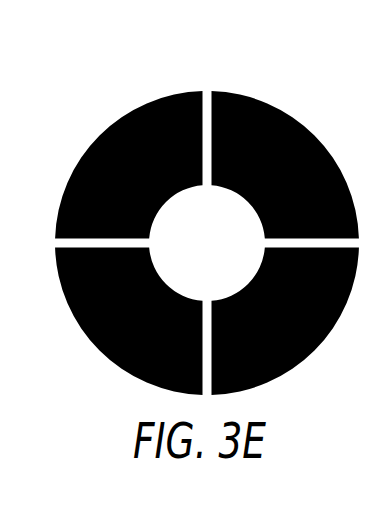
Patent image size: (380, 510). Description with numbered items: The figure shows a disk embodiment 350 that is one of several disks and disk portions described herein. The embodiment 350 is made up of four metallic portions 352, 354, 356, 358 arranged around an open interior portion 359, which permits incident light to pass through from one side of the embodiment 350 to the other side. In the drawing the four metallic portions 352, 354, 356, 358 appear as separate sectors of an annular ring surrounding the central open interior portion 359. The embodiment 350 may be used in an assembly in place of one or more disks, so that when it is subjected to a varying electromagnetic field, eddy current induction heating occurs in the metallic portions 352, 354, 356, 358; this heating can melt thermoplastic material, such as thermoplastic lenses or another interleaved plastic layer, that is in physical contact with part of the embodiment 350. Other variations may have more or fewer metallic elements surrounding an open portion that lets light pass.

The embodiment 350 is at (228, 59).
The metallic portion 352 is at (105, 114).
The metallic portion 354 is at (289, 115).
The metallic portion 356 is at (100, 347).
The metallic portion 358 is at (303, 346).
The open interior portion 359 is at (214, 283).